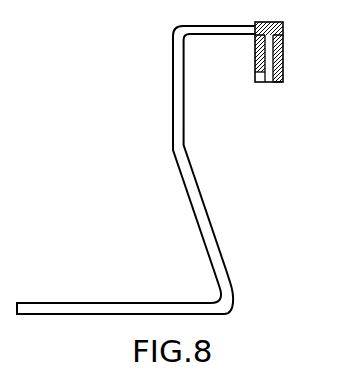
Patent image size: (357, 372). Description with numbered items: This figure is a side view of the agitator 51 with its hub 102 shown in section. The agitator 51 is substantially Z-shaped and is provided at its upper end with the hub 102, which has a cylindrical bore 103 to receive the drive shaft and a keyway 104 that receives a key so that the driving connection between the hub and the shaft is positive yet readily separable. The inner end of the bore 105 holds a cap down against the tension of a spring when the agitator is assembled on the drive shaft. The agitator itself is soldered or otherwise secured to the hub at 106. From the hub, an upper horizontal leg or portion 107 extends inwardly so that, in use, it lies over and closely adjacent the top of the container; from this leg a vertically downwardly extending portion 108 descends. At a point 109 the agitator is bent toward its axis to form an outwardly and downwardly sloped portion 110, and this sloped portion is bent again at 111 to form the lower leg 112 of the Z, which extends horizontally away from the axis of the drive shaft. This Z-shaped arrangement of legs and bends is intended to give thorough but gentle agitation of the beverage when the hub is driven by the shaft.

The agitator 51 is at (155, 115).
The hub 102 is at (269, 50).
The cylindrical bore 103 is at (275, 82).
The keyway 104 is at (257, 80).
The inner end of the bore 105 is at (273, 38).
The soldered connection 106 is at (257, 22).
The upper horizontal leg 107 is at (203, 26).
The vertically downwardly extending portion 108 is at (173, 62).
The bend point 109 is at (173, 150).
The outwardly and downwardly sloped portion 110 is at (191, 213).
The lower bend 111 is at (233, 300).
The lower leg 112 is at (124, 303).